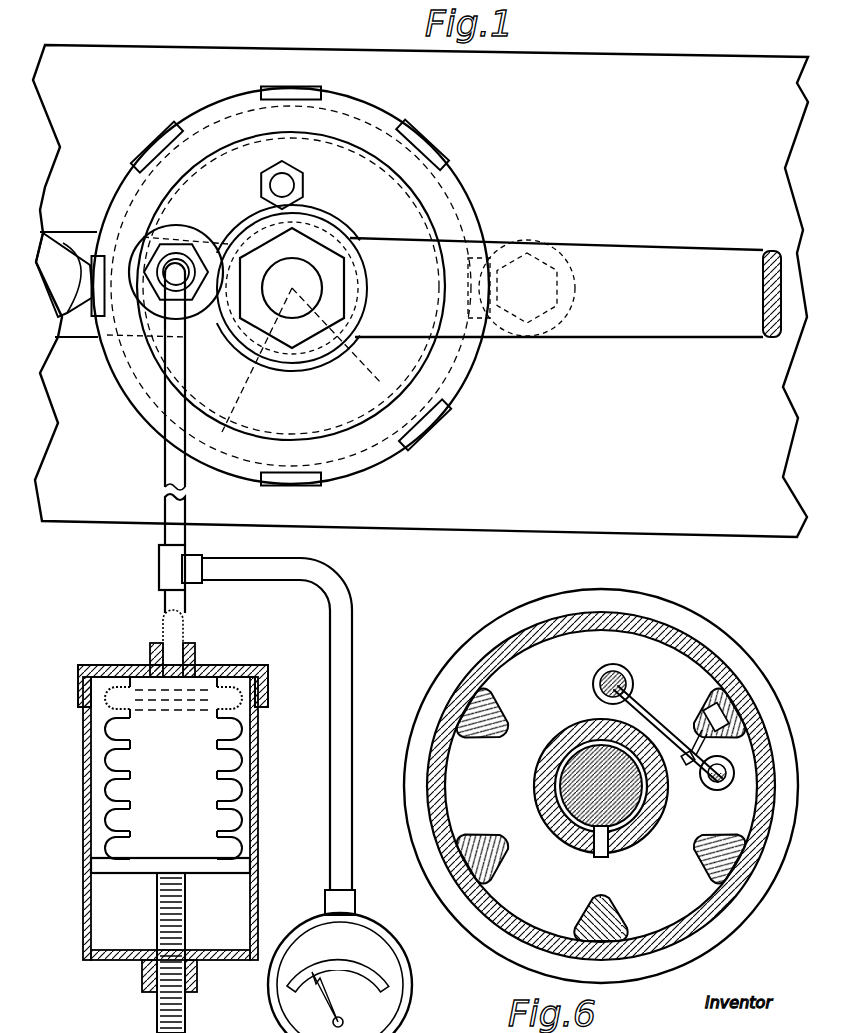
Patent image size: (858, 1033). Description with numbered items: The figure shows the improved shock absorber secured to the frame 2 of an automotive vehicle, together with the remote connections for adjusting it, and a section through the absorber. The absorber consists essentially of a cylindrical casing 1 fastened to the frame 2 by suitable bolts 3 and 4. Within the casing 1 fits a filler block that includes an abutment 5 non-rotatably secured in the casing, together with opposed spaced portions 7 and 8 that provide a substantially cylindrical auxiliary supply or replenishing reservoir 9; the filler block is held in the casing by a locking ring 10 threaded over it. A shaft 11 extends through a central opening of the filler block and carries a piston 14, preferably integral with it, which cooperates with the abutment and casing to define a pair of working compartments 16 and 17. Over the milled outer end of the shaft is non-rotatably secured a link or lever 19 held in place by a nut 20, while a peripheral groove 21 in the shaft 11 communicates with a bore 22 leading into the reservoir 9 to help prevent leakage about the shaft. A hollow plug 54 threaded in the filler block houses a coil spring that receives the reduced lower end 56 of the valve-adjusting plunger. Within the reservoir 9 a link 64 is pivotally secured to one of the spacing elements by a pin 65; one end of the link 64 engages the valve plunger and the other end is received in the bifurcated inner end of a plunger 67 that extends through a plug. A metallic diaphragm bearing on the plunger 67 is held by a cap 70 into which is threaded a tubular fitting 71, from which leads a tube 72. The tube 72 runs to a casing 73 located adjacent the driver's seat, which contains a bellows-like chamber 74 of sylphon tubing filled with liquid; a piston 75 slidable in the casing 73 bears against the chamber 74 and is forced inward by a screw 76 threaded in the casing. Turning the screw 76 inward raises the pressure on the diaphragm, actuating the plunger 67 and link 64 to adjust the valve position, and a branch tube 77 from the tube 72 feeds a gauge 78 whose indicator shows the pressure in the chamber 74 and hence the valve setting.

In FIG. 1, the cylindrical casing 1 is at (388, 111).
In FIG. 6, the cylindrical casing 1 is at (703, 917).
In FIG. 1, the frame 2 is at (297, 505).
In FIG. 1, the bolt 3 is at (65, 260).
In FIG. 1, the bolt 4 is at (558, 285).
In FIG. 1, the abutment 5 is at (392, 231).
In FIG. 6, the spaced portion 7 is at (587, 648).
In FIG. 1, the spaced portion 8 is at (343, 408).
In FIG. 6, the auxiliary supply or replenishing reservoir 9 is at (523, 910).
In FIG. 1, the locking ring 10 is at (458, 192).
In FIG. 6, the locking ring 10 is at (735, 915).
In FIG. 6, the shaft 11 is at (573, 773).
In FIG. 1, the piston 14 is at (366, 381).
In FIG. 1, the working compartment 16 is at (440, 368).
In FIG. 1, the working compartment 17 is at (197, 360).
In FIG. 1, the link or lever 19 is at (565, 287).
In FIG. 1, the nut 20 is at (332, 278).
In FIG. 6, the peripheral groove 21 is at (553, 805).
In FIG. 6, the bore 22 is at (603, 847).
In FIG. 1, the hollow plug 54 is at (297, 183).
In FIG. 6, the reduced lower end 56 is at (617, 670).
In FIG. 6, the link 64 is at (660, 715).
In FIG. 6, the pin 65 is at (690, 726).
In FIG. 6, the plunger 67 is at (712, 786).
In FIG. 1, the cap 70 is at (207, 247).
In FIG. 1, the tubular fitting 71 is at (181, 246).
In FIG. 1, the tube 72 is at (165, 465).
In FIG. 1, the casing 73 is at (85, 747).
In FIG. 1, the bellows-like chamber 74 is at (113, 663).
In FIG. 1, the piston 75 is at (242, 867).
In FIG. 1, the screw 76 is at (158, 1009).
In FIG. 1, the branch tube 77 is at (334, 645).
In FIG. 1, the gauge 78 is at (288, 1027).